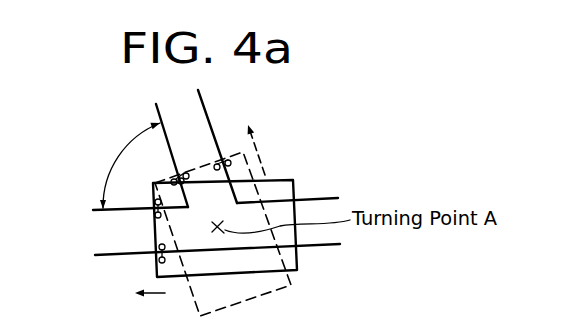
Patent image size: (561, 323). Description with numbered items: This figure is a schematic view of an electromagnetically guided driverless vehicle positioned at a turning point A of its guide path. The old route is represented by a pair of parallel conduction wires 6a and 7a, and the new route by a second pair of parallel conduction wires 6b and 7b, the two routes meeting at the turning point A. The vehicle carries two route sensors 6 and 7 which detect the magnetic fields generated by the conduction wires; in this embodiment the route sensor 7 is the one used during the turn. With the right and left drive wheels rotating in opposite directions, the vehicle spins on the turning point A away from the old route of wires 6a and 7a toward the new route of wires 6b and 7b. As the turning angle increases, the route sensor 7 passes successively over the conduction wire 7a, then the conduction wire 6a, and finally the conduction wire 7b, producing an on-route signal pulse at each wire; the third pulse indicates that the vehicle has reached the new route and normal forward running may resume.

The route sensor 6 is at (222, 164).
The route sensor 7 is at (178, 175).
The conduction wire 6a is at (93, 209).
The conduction wire 7a is at (106, 256).
The conduction wire 6b is at (203, 94).
The conduction wire 7b is at (156, 109).